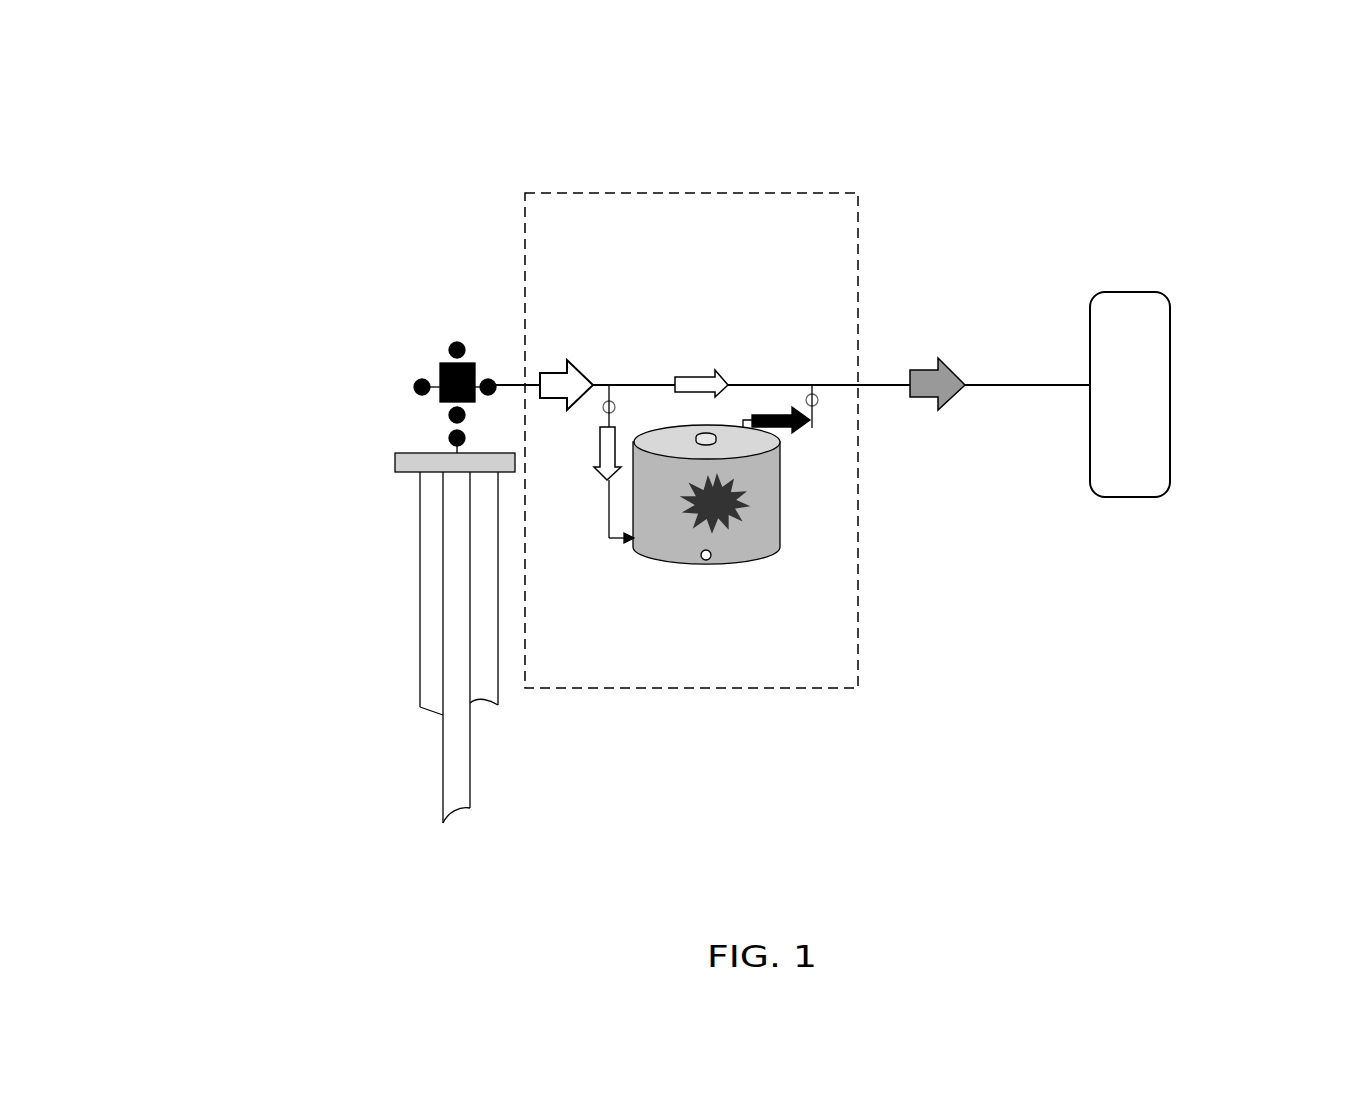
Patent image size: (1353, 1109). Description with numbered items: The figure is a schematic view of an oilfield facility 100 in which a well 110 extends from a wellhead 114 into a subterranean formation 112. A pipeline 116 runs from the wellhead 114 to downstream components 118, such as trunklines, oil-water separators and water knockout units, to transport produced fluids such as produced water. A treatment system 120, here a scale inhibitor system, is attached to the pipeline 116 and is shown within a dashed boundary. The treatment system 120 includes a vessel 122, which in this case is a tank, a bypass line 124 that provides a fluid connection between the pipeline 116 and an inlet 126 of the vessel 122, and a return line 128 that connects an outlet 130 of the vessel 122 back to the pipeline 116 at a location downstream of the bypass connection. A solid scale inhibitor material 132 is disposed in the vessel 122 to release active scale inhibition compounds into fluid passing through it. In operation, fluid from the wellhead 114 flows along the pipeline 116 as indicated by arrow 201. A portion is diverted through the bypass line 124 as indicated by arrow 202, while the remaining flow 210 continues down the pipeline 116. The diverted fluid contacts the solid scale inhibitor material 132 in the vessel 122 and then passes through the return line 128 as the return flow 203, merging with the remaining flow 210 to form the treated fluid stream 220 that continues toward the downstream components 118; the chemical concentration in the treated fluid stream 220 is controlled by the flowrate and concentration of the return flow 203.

The oilfield facility 100 is at (407, 148).
The well 110 is at (270, 641).
The subterranean formation 112 is at (313, 763).
The wellhead 114 is at (440, 372).
The pipeline 116 is at (898, 383).
The downstream components 118 is at (1170, 428).
The treatment system 120 is at (752, 192).
The vessel 122 is at (685, 565).
The bypass line 124 is at (622, 541).
The inlet 126 is at (613, 542).
The return line 128 is at (815, 415).
The outlet 130 is at (750, 402).
The solid scale inhibitor material 132 is at (709, 560).
The arrow indicating fluid flow from the wellhead 201 is at (566, 360).
The arrow indicating diverted flow 202 is at (575, 449).
The return flow 203 is at (792, 430).
The remaining flow 210 is at (725, 378).
The treated fluid stream 220 is at (940, 357).